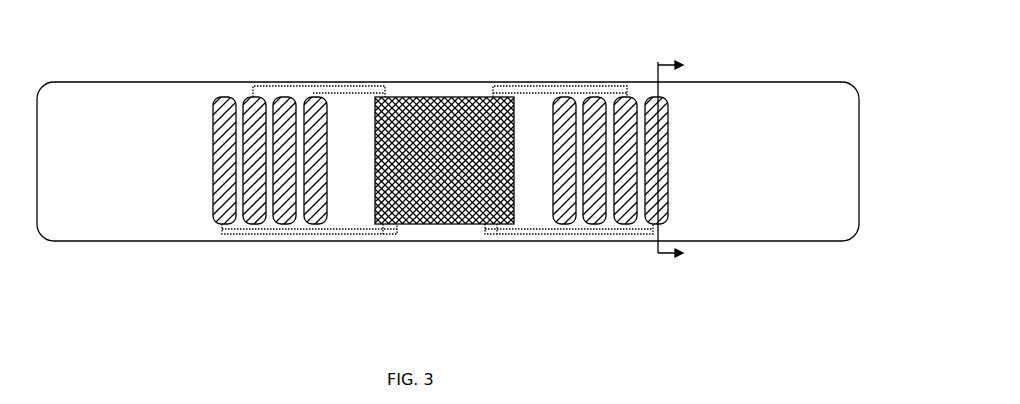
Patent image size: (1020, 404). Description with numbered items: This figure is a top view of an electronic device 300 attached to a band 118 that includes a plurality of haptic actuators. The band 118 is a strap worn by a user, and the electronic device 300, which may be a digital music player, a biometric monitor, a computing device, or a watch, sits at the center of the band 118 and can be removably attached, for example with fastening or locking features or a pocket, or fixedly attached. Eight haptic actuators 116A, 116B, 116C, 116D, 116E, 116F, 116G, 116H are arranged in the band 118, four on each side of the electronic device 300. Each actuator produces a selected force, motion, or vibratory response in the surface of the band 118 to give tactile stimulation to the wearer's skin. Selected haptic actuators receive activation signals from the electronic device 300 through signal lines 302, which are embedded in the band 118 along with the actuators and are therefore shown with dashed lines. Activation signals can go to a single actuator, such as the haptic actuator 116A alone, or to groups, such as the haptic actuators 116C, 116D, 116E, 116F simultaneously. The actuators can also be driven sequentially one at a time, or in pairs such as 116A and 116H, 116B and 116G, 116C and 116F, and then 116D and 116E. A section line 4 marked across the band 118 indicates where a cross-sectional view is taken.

The band 118 is at (858, 122).
The haptic actuator 116A is at (213, 148).
The haptic actuator 116B is at (250, 97).
The haptic actuator 116C is at (288, 97).
The haptic actuator 116D is at (317, 97).
The haptic actuator 116E is at (568, 97).
The haptic actuator 116F is at (592, 97).
The haptic actuator 116G is at (633, 97).
The haptic actuator 116H is at (668, 170).
The electronic device 300 is at (460, 224).
The signal lines 302 is at (522, 87).
The section line 4- 4 is at (678, 160).